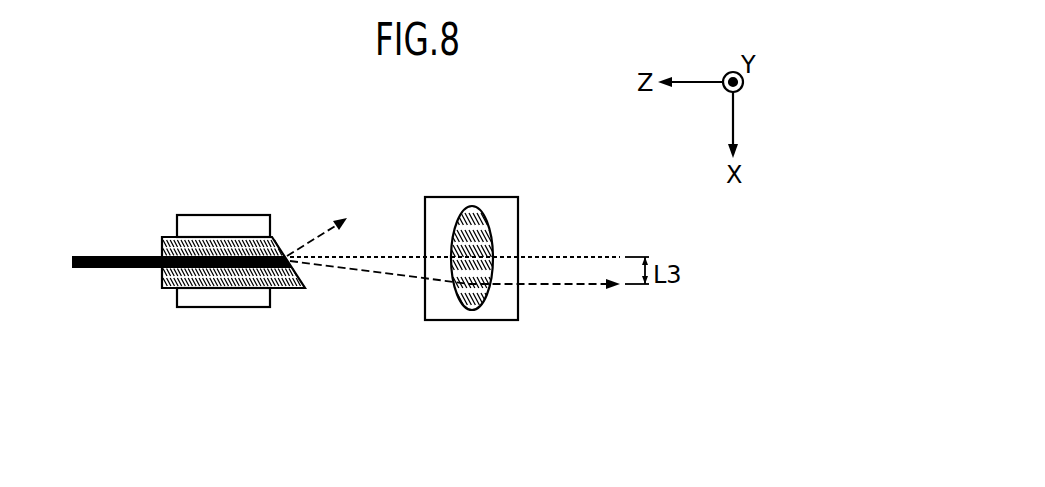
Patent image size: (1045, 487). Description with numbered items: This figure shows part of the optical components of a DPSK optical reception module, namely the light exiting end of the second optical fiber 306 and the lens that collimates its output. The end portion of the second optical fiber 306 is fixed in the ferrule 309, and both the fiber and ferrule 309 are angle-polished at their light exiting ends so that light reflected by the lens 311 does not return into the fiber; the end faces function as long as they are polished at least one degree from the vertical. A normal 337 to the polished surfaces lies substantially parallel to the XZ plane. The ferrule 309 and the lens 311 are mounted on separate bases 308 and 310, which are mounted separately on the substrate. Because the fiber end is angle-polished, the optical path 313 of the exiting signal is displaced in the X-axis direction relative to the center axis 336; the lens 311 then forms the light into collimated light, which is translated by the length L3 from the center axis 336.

The second optical fiber 306 is at (127, 256).
The base 308 is at (222, 300).
The ferrule 309 is at (203, 243).
The base 310 is at (445, 215).
The lens 311 is at (472, 208).
The optical path 313 is at (370, 273).
The center axis 336 is at (585, 257).
The normal 337 is at (315, 240).